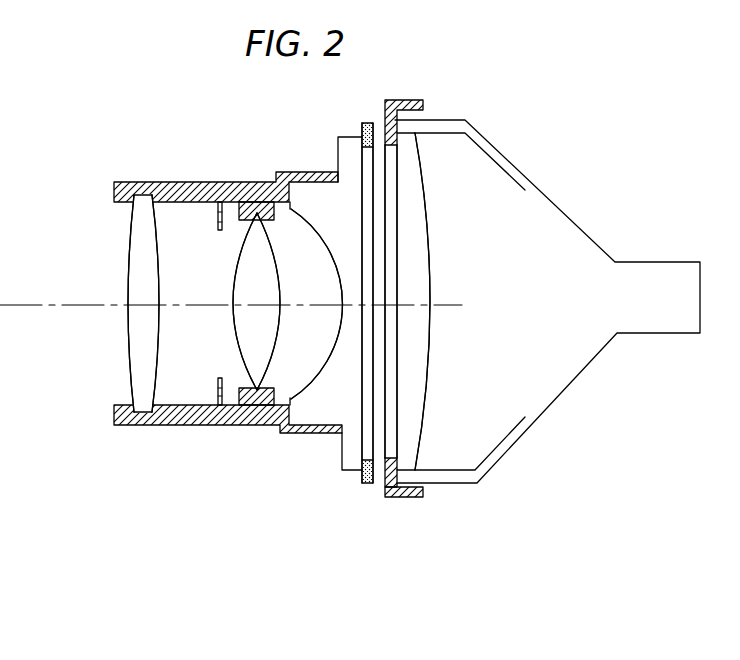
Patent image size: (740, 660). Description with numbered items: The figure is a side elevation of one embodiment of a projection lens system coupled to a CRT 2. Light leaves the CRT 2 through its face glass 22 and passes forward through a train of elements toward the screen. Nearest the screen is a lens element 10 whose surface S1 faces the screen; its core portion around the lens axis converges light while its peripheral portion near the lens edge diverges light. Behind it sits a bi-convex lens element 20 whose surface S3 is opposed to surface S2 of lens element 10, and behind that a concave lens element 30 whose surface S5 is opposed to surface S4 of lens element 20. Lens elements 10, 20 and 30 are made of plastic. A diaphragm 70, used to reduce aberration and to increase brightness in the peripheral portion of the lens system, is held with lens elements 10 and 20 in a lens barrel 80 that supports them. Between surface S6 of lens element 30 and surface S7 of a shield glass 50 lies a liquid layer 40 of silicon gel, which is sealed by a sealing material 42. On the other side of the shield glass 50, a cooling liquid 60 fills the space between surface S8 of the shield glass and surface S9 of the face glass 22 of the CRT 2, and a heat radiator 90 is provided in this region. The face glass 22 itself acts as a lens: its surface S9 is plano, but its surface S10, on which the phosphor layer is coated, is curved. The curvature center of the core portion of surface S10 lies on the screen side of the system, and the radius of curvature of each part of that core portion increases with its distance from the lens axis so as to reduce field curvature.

The CRT 2 is at (558, 208).
The lens element 10 is at (143, 367).
The bi-convex lens element 20 is at (240, 343).
The face glass 22 is at (408, 427).
The concave lens element 30 is at (333, 360).
The liquid layer 40 is at (370, 435).
The sealing material 42 is at (367, 484).
The shield glass 50 is at (383, 482).
The cooling liquid 60 is at (392, 388).
The diaphragm 70 is at (218, 222).
The lens barrel 80 is at (154, 426).
The heat radiator 90 is at (410, 497).
The surface S1 is at (128, 264).
The surface S2 is at (158, 264).
The surface S3 is at (237, 264).
The surface S4 is at (277, 264).
The surface S5 is at (341, 264).
The surface S6 is at (361, 348).
The surface S7 is at (372, 168).
The surface S8 is at (385, 168).
The surface S9 is at (397, 207).
The surface S10 is at (428, 265).